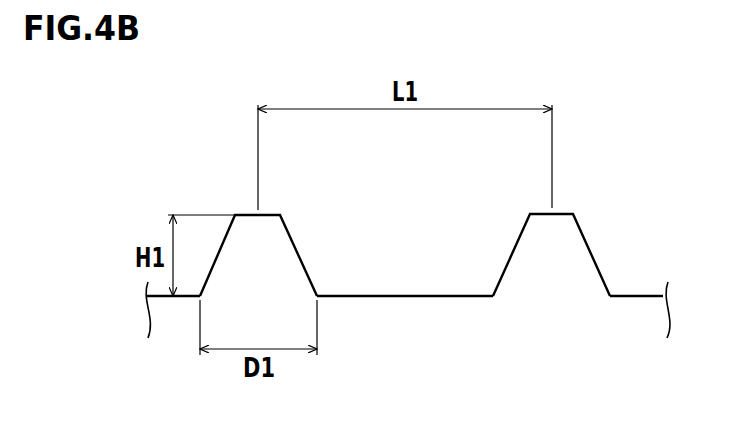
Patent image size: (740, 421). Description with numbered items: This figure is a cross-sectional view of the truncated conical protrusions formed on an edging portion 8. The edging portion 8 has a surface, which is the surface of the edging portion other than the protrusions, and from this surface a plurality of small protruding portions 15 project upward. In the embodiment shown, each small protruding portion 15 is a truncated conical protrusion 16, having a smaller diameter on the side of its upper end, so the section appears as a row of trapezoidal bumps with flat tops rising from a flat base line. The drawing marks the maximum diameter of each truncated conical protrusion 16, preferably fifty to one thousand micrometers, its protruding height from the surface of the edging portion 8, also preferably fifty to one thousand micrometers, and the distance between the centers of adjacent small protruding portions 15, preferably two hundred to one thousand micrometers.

The edging portion 8 is at (403, 296).
The small protruding portion 15 is at (300, 255).
The truncated conical protrusion 16 is at (508, 255).